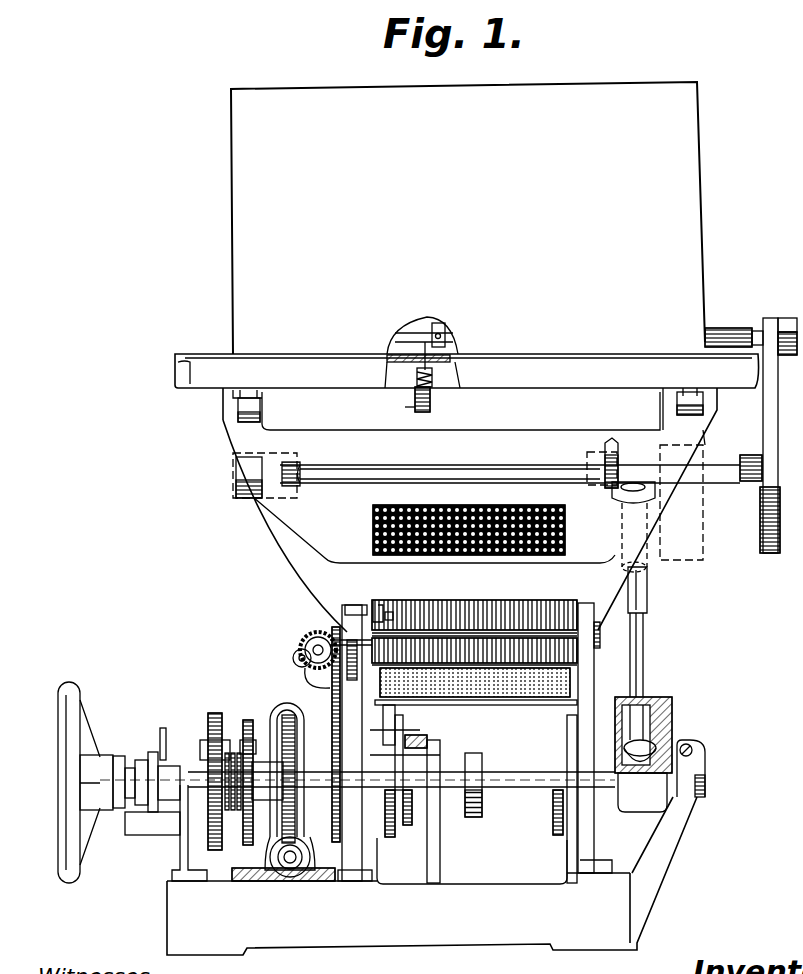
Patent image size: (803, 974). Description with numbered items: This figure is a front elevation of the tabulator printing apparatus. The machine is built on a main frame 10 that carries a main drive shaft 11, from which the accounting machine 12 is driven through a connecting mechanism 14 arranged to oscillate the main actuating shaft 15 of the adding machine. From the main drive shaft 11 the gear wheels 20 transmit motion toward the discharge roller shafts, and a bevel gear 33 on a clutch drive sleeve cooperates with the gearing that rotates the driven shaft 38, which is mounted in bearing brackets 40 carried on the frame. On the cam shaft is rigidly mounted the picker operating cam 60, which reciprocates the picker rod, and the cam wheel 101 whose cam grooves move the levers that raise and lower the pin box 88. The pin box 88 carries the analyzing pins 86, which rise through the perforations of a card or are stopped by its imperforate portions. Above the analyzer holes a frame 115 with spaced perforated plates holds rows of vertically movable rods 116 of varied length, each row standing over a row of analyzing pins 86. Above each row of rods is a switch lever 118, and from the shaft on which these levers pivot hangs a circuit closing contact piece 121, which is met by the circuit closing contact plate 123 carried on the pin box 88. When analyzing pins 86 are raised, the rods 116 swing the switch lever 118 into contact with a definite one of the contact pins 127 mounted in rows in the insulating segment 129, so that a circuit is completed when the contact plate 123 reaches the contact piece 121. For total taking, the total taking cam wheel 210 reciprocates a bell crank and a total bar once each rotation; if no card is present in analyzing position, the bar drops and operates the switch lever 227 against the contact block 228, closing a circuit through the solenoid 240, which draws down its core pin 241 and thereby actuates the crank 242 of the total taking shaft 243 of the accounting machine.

The main frame 10 is at (594, 693).
The main drive shaft 11 is at (713, 776).
The accounting machine 12 is at (699, 231).
The connecting mechanism 14 is at (668, 558).
The main actuating shaft 15 is at (734, 327).
The gear wheels 20 is at (332, 726).
The bevel gear 33 is at (294, 659).
The driven shaft 38 is at (300, 649).
The bearing brackets 40 is at (316, 673).
The picker operating cam 60 is at (474, 818).
The analyzing pins 86 is at (560, 612).
The pin box 88 is at (503, 704).
The cam wheel 101 is at (389, 839).
The frame 115 is at (493, 600).
The vertically movable rods 116 is at (520, 601).
The switch lever 118 is at (449, 601).
The circuit closing contact piece 121 is at (375, 612).
The circuit closing contact plate 123 is at (375, 637).
The contact pins 127 is at (567, 531).
The segment 129 is at (477, 500).
The total taking cam wheel 210 is at (411, 826).
The switch lever 227 is at (425, 728).
The contact block 228 is at (447, 745).
The solenoid 240 is at (430, 406).
The core pin 241 is at (433, 377).
The crank 242 is at (438, 325).
The total taking shaft 243 is at (405, 330).